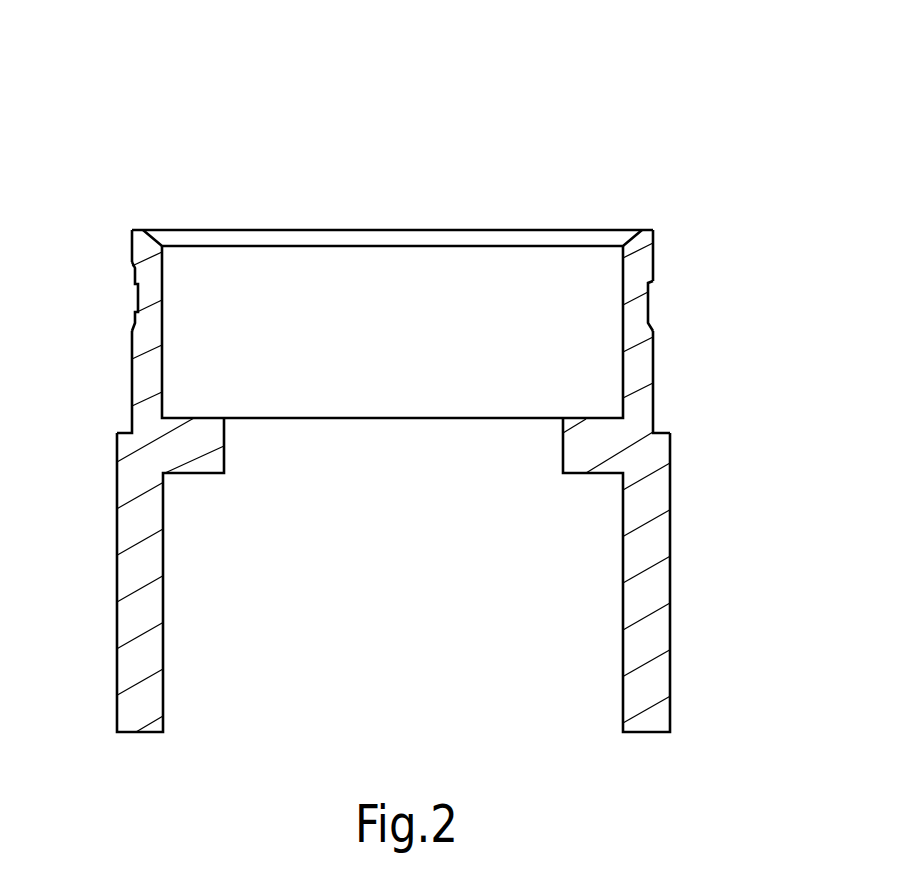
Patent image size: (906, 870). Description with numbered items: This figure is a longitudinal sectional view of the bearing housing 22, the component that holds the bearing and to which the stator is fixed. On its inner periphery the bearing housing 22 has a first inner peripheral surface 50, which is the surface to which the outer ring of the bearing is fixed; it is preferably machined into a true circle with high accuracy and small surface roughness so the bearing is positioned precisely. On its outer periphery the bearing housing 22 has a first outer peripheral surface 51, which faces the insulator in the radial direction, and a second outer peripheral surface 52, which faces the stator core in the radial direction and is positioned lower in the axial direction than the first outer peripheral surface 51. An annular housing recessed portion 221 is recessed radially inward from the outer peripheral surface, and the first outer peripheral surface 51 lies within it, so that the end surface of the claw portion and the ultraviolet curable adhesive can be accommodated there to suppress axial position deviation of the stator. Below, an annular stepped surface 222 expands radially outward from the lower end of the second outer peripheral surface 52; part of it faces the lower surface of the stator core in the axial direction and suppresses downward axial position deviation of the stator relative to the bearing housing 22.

The bearing housing 22 is at (312, 174).
The first inner peripheral surface 50 is at (622, 333).
The first outer peripheral surface 51 is at (649, 311).
The second outer peripheral surface 52 is at (655, 393).
The housing recessed portion 221 is at (131, 302).
The stepped surface 222 is at (123, 432).